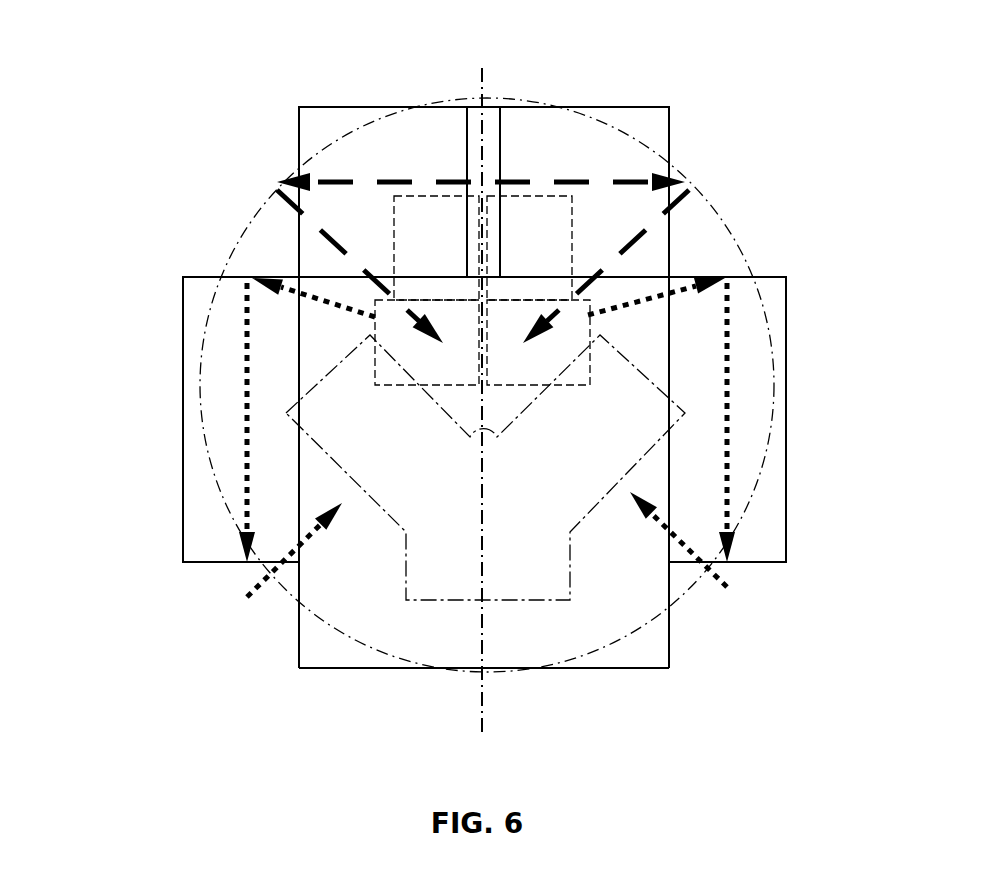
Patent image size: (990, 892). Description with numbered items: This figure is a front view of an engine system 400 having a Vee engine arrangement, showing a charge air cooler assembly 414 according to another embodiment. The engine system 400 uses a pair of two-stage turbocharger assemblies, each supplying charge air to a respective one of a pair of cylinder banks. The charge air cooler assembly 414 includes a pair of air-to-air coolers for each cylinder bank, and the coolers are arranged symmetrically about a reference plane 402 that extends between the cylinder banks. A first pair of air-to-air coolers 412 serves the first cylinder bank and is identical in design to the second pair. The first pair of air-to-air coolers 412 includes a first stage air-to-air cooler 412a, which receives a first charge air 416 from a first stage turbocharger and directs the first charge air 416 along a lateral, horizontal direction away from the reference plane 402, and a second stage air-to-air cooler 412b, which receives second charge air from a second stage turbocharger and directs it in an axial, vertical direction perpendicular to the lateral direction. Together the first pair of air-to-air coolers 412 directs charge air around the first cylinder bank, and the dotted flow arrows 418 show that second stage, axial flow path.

The engine system 400 is at (218, 98).
The reference plane 402 is at (482, 631).
The first pair of air-to-air coolers 412 is at (833, 245).
The first stage air-to-air cooler 412a is at (540, 145).
The second stage air-to-air cooler 412b is at (765, 533).
The charge air cooler assembly 414 is at (375, 645).
The first charge air 416 is at (615, 183).
The second movement path 418 is at (727, 427).